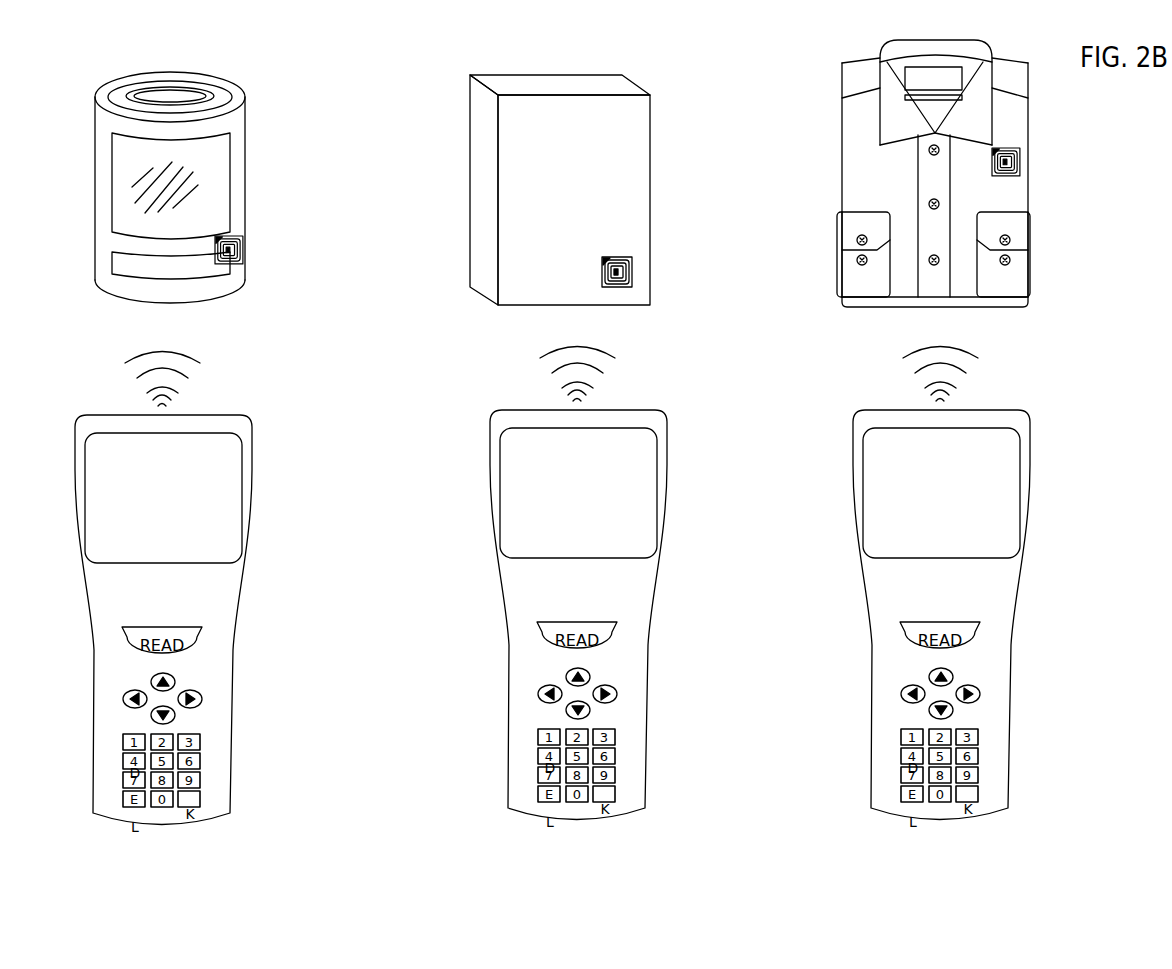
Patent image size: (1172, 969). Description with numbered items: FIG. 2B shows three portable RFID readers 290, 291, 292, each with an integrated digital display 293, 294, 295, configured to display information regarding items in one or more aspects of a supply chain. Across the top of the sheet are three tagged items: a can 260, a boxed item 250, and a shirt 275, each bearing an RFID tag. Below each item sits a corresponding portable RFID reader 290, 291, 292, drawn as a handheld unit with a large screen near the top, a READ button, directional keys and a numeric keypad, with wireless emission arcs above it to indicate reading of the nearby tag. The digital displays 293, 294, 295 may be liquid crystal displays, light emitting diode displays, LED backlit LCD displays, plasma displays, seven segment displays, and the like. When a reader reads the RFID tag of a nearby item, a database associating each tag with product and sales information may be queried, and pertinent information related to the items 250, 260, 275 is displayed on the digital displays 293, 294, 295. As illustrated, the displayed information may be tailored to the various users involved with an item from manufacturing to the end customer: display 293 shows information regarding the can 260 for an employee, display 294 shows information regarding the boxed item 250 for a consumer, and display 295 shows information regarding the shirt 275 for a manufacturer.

The item 250 is at (622, 75).
The item 260 is at (237, 85).
The item 275 is at (842, 65).
The portable RFID reader 290 is at (274, 409).
The portable RFID reader 291 is at (619, 589).
The portable RFID reader 292 is at (982, 589).
The digital display 293 is at (241, 456).
The digital display 294 is at (604, 493).
The digital display 295 is at (967, 493).